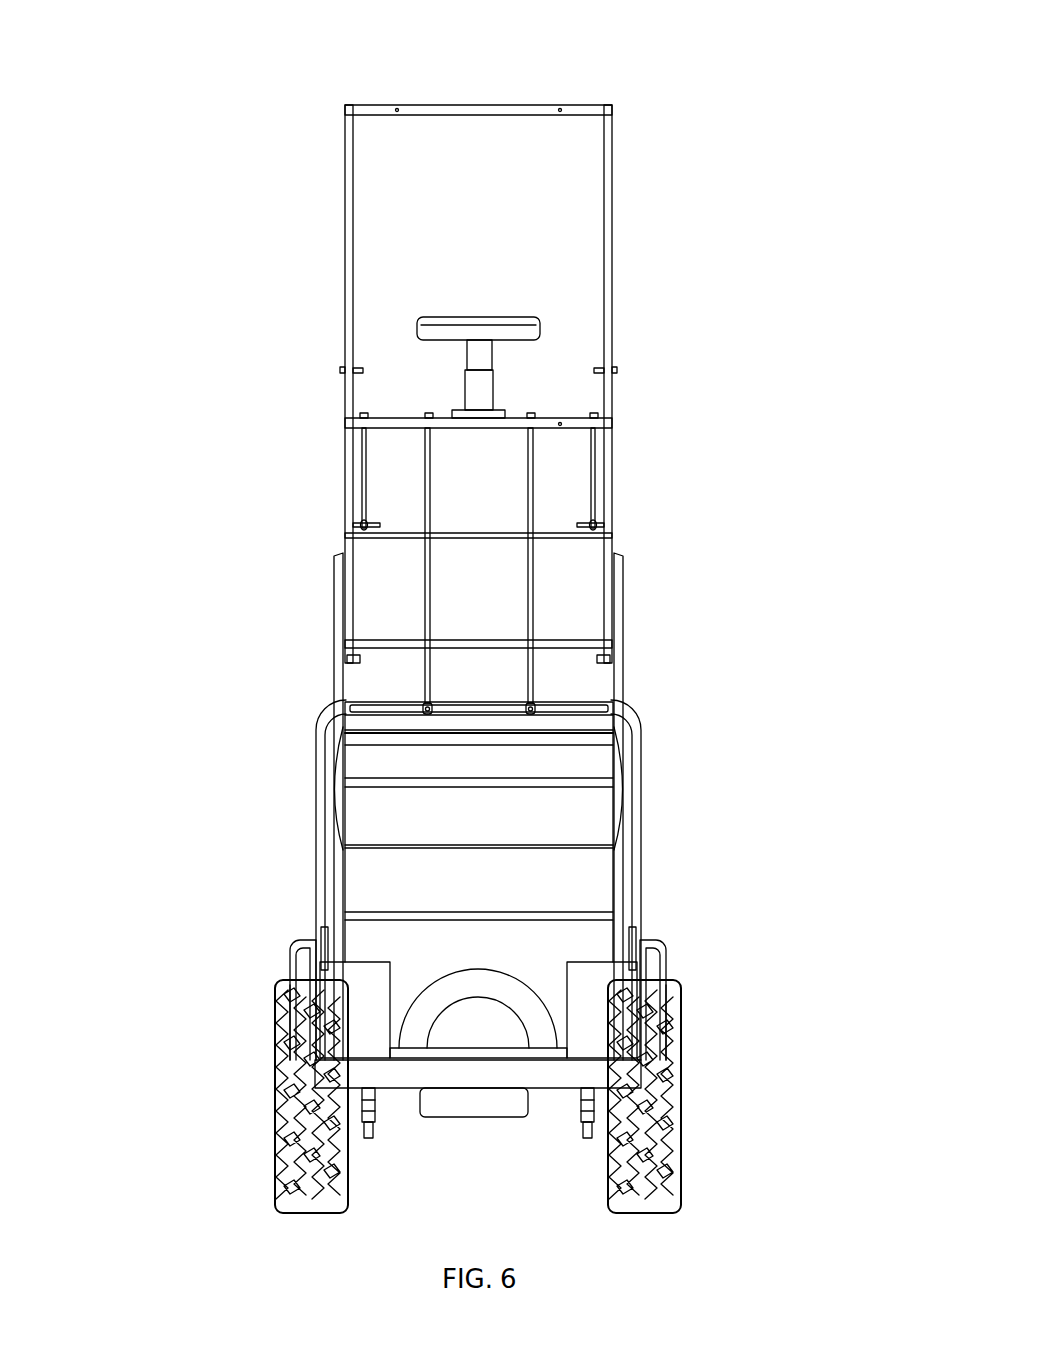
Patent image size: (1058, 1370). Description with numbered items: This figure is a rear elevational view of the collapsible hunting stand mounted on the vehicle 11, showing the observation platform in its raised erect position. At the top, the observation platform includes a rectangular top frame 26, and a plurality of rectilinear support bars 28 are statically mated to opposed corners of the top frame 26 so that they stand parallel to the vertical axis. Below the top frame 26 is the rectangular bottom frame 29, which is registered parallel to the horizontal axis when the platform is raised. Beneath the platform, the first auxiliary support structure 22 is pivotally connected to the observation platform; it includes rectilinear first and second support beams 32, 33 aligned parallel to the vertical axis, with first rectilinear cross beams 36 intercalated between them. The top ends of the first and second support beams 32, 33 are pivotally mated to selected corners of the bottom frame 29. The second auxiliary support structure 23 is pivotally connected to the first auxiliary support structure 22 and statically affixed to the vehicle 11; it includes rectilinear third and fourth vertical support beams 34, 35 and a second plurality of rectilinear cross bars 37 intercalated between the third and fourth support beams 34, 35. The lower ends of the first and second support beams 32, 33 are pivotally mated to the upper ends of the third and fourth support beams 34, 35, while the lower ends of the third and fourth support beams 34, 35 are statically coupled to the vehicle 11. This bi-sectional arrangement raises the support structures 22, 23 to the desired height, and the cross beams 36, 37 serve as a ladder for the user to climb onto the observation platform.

The vehicle 11 is at (667, 960).
The first auxiliary support structure 22 is at (613, 480).
The second auxiliary support structure 23 is at (622, 693).
The top frame 26 is at (544, 95).
The support bars 28 is at (345, 217).
The bottom frame 29 is at (397, 427).
The first support beam 32 is at (350, 492).
The second support beam 33 is at (613, 502).
The third support beam 34 is at (337, 692).
The fourth support beam 35 is at (627, 757).
The first cross beams 36 is at (437, 535).
The second cross bars 37 is at (420, 915).